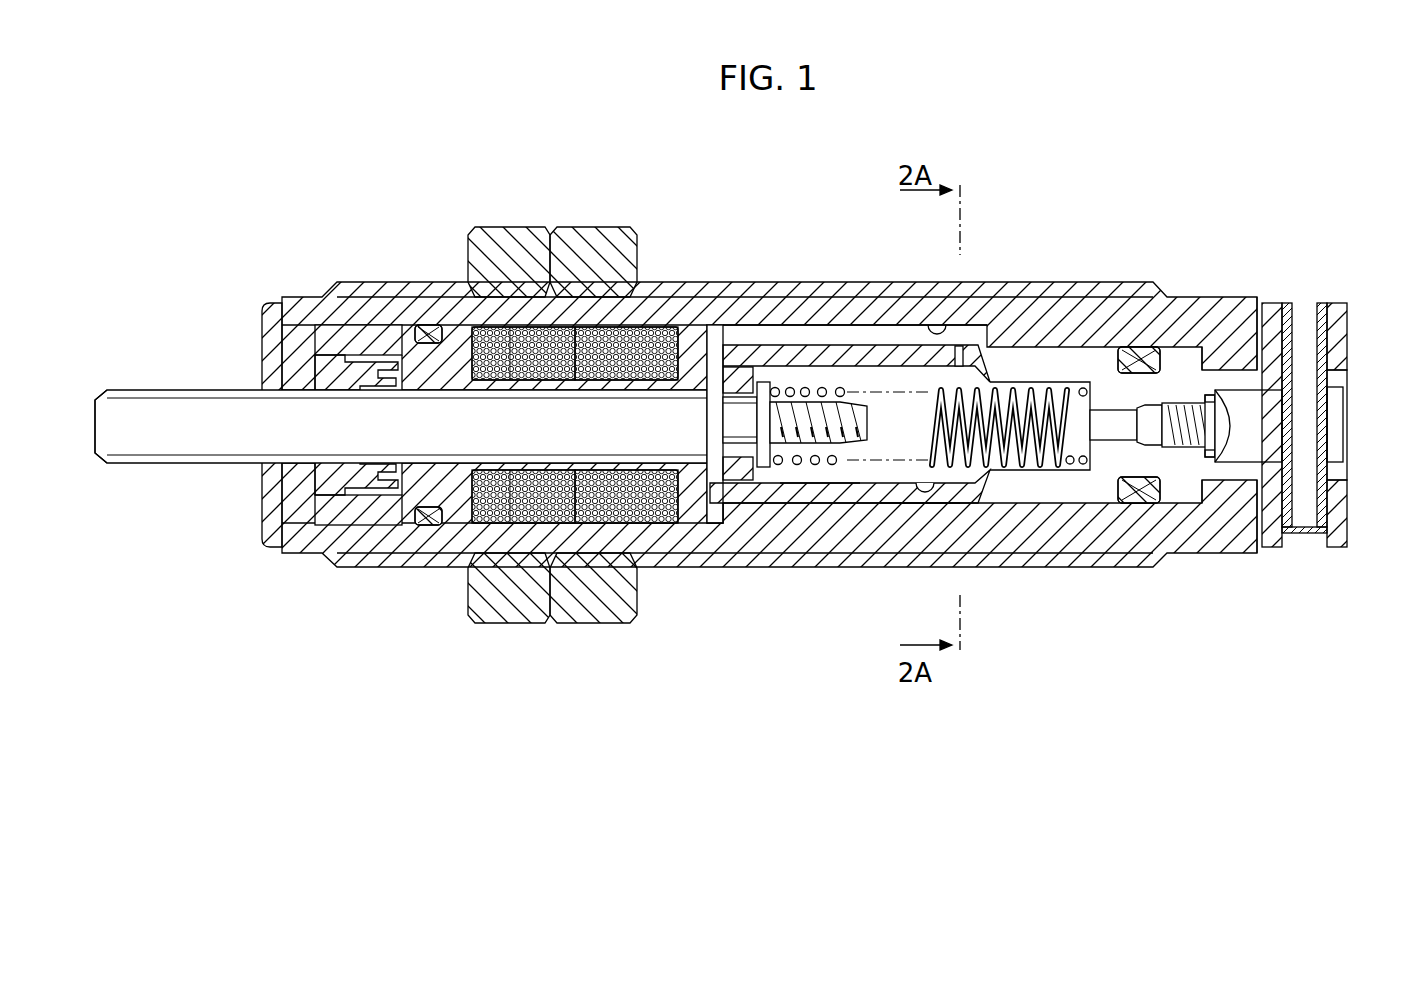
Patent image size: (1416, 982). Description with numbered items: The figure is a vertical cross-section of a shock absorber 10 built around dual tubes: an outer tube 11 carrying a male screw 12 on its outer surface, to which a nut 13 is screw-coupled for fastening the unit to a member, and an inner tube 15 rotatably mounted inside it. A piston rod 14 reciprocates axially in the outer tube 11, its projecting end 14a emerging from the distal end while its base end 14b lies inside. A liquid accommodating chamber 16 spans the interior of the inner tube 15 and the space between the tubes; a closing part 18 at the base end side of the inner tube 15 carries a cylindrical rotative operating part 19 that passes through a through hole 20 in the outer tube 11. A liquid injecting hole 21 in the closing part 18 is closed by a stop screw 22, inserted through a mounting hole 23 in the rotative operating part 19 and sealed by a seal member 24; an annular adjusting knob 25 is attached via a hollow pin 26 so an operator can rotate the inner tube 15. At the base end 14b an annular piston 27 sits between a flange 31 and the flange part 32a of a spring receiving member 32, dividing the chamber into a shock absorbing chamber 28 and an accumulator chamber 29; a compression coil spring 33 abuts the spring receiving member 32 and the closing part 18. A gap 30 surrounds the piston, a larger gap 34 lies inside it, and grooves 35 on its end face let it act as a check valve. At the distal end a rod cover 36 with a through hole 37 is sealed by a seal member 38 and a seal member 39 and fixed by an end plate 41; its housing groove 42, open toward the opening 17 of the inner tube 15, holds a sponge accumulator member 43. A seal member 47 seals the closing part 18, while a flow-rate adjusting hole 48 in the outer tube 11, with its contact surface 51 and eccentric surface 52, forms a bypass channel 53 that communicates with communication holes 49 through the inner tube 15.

The shock absorber 10 is at (769, 386).
The outer tube 11 is at (1062, 540).
The male screw 12 is at (1080, 297).
The nut 13 is at (508, 245).
The piston rod 14 is at (418, 432).
The projecting end 14a is at (118, 440).
The base end 14b is at (738, 450).
The inner tube 15 is at (850, 500).
The liquid accommodating chamber 16 is at (892, 364).
The opening 17 is at (722, 340).
The closing part 18 is at (1150, 442).
The rotative operating part 19 is at (1272, 547).
The through hole 20 is at (1238, 465).
The liquid injecting hole 21 is at (1125, 345).
The stop screw 22 is at (1185, 404).
The mounting hole 23 is at (1340, 420).
The seal member 24 is at (1210, 395).
The adjusting knob 25 is at (1337, 303).
The hollow pin 26 is at (1320, 535).
The annular piston 27 is at (737, 372).
The shock absorbing chamber 28 is at (925, 490).
The accumulator chamber 29 is at (712, 518).
The gap 30 is at (742, 470).
The flange 31 is at (714, 345).
The spring receiving member 32 is at (818, 400).
The flange part 32a is at (768, 462).
The compression coil spring 33 is at (1000, 392).
The gap 34 is at (790, 387).
The grooves 35 is at (762, 470).
The rod cover 36 is at (372, 335).
The through hole 37 is at (458, 468).
The seal member 38 is at (332, 495).
The seal member 39 is at (428, 326).
The end plate 41 is at (270, 303).
The housing groove 42 is at (510, 495).
The accumulator member 43 is at (603, 495).
The seal member 47 is at (1135, 502).
The flow-rate adjusting hole 48 is at (895, 494).
The communication holes 49 is at (960, 348).
The contact surface 51 is at (812, 492).
The eccentric surface 52 is at (937, 326).
The bypass channel 53 is at (880, 337).